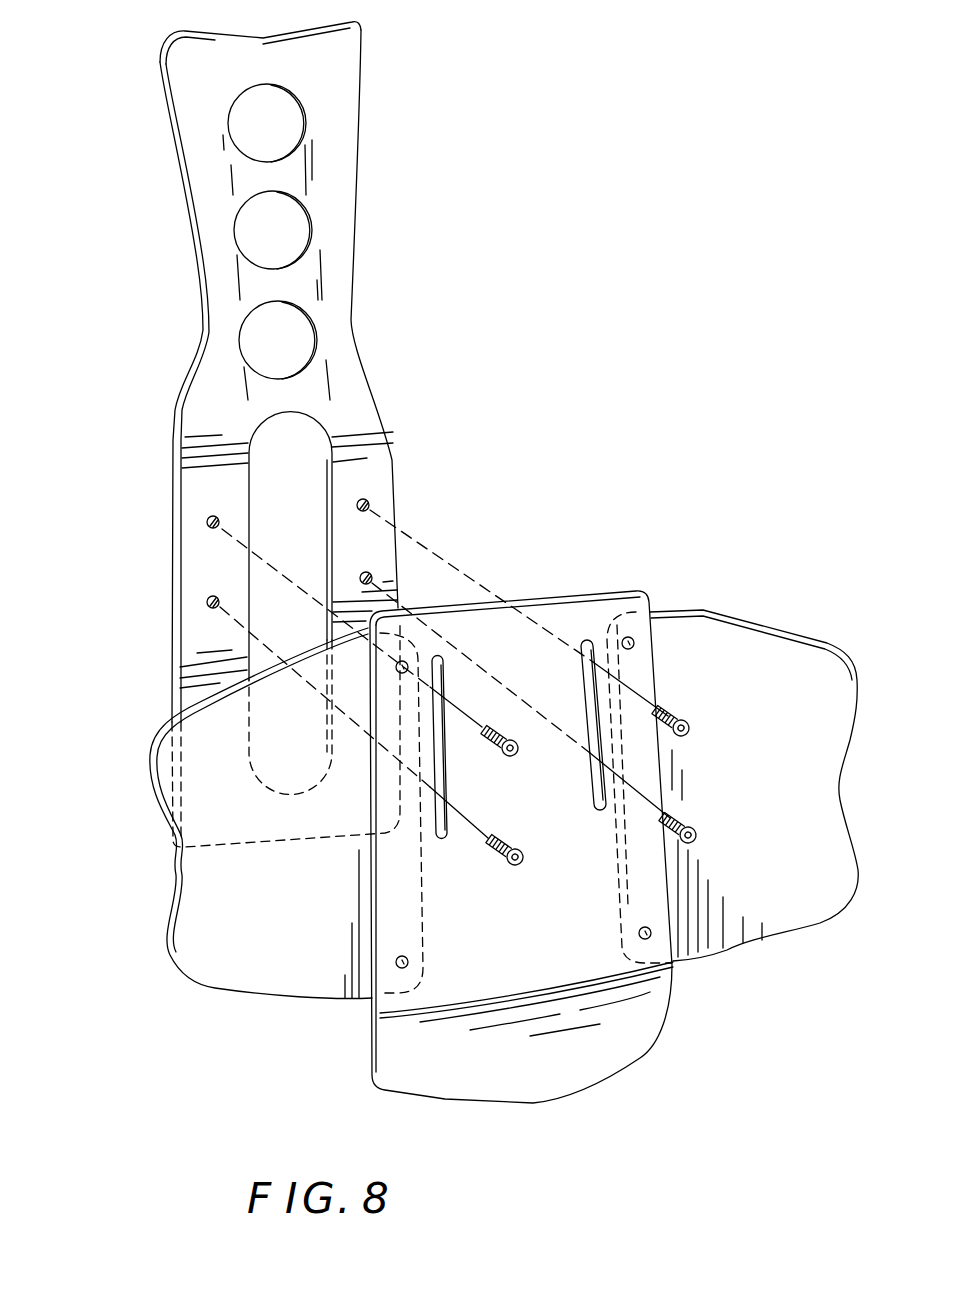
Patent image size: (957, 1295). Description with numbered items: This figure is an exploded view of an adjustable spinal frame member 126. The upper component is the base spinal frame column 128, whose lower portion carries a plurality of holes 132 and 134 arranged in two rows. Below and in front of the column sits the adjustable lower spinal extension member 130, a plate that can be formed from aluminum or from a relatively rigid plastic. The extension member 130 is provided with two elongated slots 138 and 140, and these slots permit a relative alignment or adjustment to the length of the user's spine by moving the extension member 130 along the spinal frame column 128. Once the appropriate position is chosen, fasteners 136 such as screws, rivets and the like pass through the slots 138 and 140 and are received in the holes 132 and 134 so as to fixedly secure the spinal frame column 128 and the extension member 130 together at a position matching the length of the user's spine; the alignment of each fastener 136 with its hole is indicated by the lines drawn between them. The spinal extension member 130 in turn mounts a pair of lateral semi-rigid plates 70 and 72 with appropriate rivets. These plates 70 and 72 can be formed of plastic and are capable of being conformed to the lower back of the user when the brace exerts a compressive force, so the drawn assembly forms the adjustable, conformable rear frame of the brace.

The adjustable spinal frame member 126 is at (472, 258).
The spinal frame column 128 is at (196, 335).
The adjustable lower spinal extension member 130 is at (552, 596).
The holes 132 is at (208, 601).
The holes 134 is at (368, 577).
The fasteners 136 is at (514, 849).
The elongated slot 138 is at (447, 842).
The elongated slot 140 is at (601, 812).
The lateral semi-rigid plate 70 is at (220, 965).
The lateral semi-rigid plate 72 is at (762, 925).